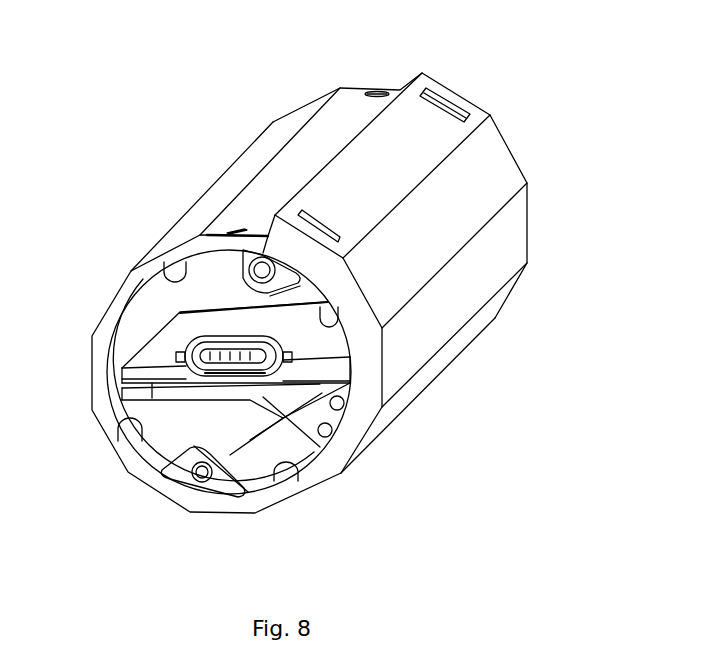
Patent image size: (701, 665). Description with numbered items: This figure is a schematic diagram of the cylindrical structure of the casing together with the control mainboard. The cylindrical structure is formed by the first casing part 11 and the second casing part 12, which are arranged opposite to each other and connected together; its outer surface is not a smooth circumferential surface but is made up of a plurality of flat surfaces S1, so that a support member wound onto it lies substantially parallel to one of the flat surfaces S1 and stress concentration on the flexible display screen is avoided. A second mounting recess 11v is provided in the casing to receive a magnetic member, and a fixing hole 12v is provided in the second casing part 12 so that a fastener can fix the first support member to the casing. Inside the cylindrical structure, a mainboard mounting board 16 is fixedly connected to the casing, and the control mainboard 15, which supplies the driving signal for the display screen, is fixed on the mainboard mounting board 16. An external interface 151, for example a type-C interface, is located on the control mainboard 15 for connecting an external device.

The first casing part 11 is at (328, 472).
The second mounting recess 11v is at (452, 115).
The second casing part 12 is at (103, 328).
The fixing hole 12v is at (228, 232).
The control mainboard 15 is at (300, 372).
The external interface 151 is at (237, 368).
The mainboard mounting board 16 is at (168, 403).
The flat surface S1 is at (232, 215).